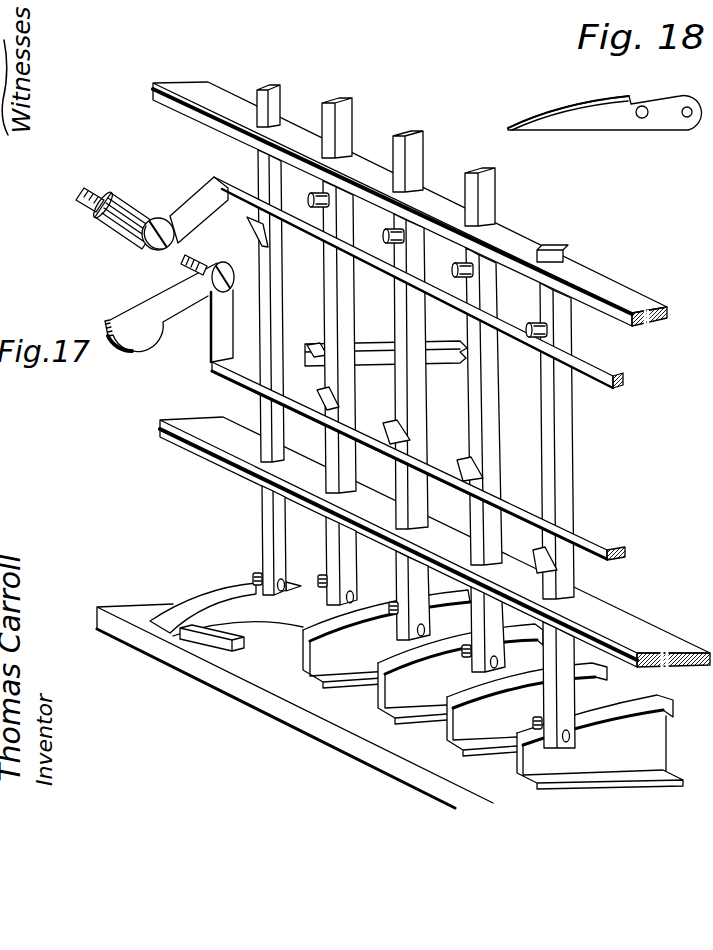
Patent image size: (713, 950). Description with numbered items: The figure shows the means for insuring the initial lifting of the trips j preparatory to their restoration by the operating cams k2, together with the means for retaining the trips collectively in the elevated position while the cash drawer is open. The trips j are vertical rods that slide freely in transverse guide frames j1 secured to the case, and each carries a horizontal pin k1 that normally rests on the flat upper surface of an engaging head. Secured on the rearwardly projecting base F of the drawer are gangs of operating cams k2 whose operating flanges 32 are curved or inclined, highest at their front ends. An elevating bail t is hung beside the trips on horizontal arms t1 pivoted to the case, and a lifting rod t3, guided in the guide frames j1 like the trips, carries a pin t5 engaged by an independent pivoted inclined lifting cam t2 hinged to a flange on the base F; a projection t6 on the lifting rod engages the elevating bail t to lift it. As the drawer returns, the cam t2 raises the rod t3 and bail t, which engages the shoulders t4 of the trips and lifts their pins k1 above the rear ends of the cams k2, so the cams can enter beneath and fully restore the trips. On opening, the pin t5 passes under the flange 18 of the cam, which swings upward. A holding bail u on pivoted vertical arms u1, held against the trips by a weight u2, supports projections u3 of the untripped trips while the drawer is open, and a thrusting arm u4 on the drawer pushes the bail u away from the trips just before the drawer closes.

In FIG. 17, the base of the drawer F is at (295, 706).
In FIG. 17, the trips j is at (551, 248).
In FIG. 17, the guide frames j1 is at (609, 274).
In FIG. 17, the elevating bail t is at (611, 374).
In FIG. 17, the horizontal arms t1 is at (172, 230).
In FIG. 17, the lifting cam t2 is at (238, 627).
In FIG. 18, the lifting cam t2 is at (604, 113).
In FIG. 17, the lifting rod t3 is at (268, 88).
In FIG. 17, the engaging shoulders t4 is at (531, 330).
In FIG. 17, the pin t5 is at (255, 575).
In FIG. 18, the pin t5 is at (646, 107).
In FIG. 17, the projection t6 is at (248, 230).
In FIG. 17, the holding bail u is at (612, 546).
In FIG. 17, the vertical arms u1 is at (222, 333).
In FIG. 17, the weight u2 is at (169, 303).
In FIG. 17, the projections u3 is at (538, 556).
In FIG. 17, the thrusting arm u4 is at (386, 350).
In FIG. 17, the horizontal pin k1 is at (322, 576).
In FIG. 17, the operating cams k2 is at (493, 689).
In FIG. 17, the flange of the lifting cam 18 is at (225, 607).
In FIG. 18, the flange of the lifting cam 18 is at (571, 111).
In FIG. 17, the operating flanges 32 is at (522, 672).